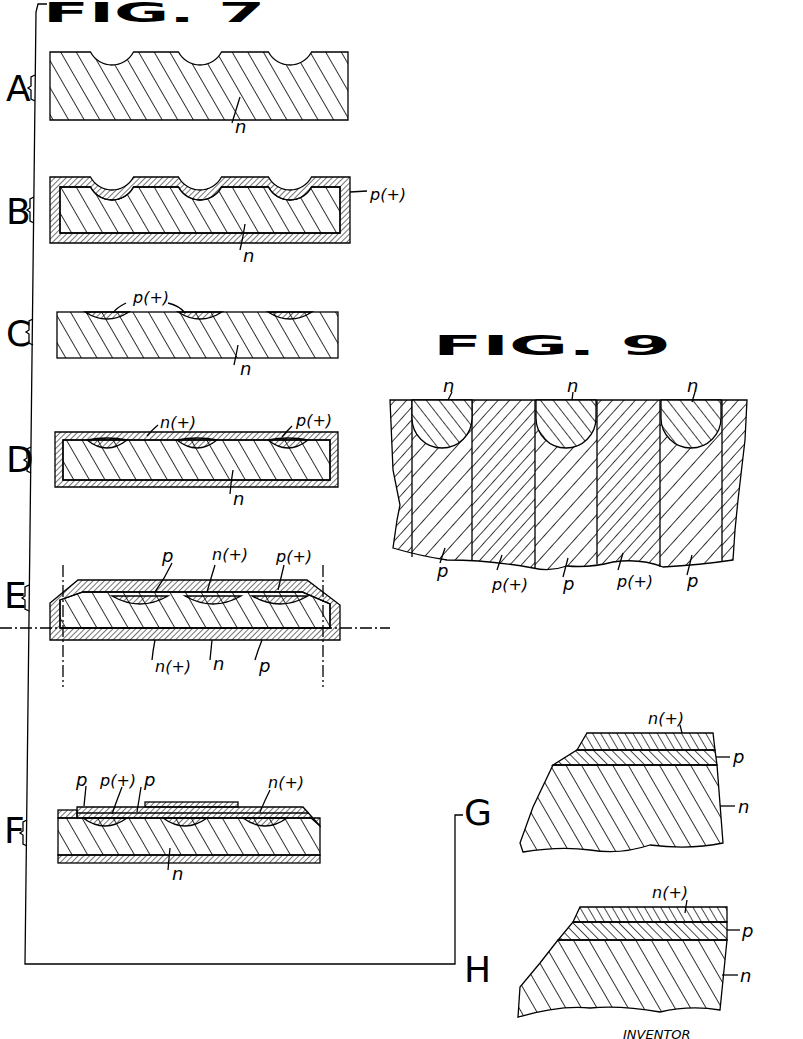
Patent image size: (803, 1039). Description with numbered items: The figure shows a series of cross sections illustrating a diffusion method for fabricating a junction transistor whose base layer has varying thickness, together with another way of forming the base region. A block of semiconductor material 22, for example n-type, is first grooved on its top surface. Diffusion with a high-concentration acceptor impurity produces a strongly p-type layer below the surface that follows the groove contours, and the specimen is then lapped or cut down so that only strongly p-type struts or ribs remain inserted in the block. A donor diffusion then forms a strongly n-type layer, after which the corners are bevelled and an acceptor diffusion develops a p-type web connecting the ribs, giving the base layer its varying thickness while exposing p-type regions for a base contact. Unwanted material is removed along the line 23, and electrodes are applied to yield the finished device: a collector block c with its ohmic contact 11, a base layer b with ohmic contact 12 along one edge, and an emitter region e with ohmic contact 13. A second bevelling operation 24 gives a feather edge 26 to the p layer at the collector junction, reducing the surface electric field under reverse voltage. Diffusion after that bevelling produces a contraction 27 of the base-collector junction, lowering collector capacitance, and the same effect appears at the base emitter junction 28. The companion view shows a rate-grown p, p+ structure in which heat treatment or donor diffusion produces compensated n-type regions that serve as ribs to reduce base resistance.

The block of semiconductor material 22 is at (348, 87).
The line 23 is at (63, 668).
The ohmic contact 11 is at (250, 858).
The ohmic contact 12 is at (63, 807).
The ohmic contact 13 is at (210, 802).
The second bevelling operation 24 is at (547, 797).
The feather edge 26 is at (537, 812).
The contraction 27 is at (537, 967).
The base emitter junction 28 is at (580, 908).
The emitter region e is at (310, 808).
The base layer b is at (318, 822).
The collector block c is at (325, 842).